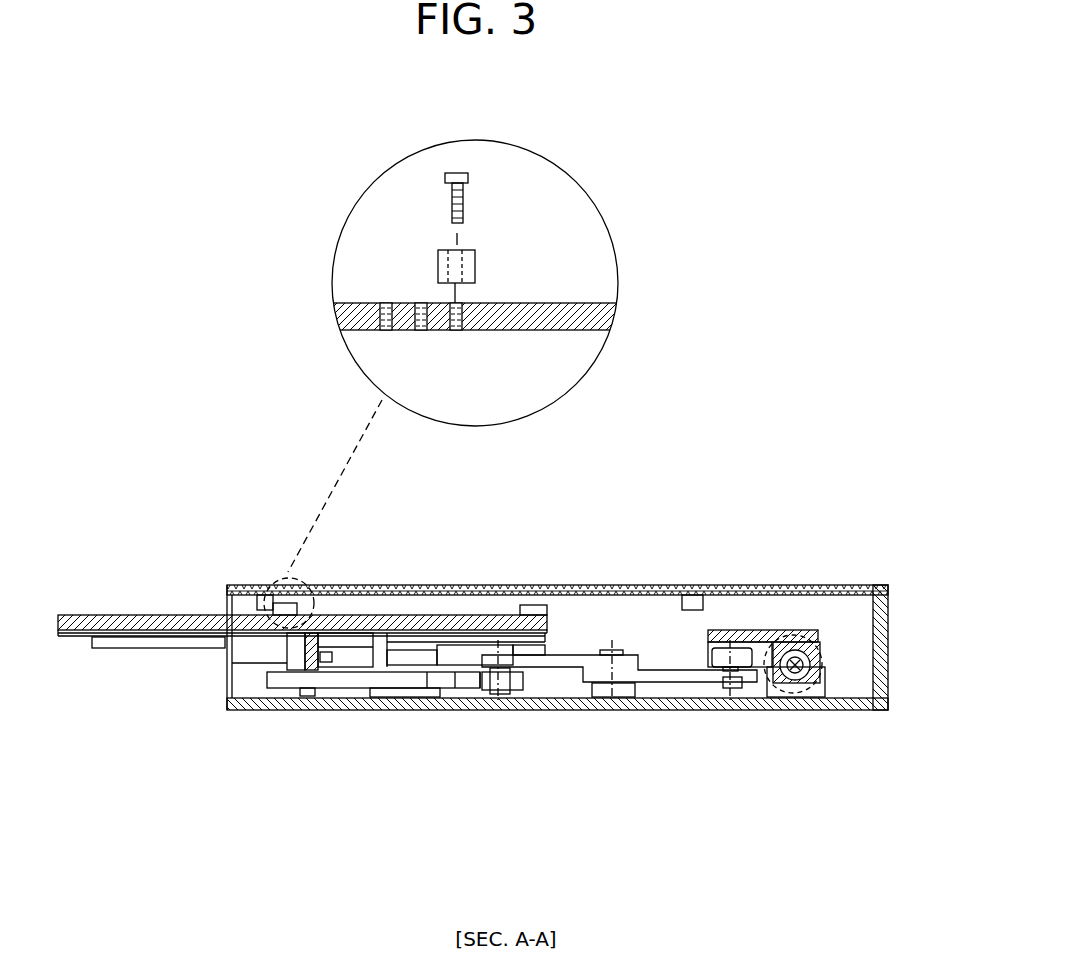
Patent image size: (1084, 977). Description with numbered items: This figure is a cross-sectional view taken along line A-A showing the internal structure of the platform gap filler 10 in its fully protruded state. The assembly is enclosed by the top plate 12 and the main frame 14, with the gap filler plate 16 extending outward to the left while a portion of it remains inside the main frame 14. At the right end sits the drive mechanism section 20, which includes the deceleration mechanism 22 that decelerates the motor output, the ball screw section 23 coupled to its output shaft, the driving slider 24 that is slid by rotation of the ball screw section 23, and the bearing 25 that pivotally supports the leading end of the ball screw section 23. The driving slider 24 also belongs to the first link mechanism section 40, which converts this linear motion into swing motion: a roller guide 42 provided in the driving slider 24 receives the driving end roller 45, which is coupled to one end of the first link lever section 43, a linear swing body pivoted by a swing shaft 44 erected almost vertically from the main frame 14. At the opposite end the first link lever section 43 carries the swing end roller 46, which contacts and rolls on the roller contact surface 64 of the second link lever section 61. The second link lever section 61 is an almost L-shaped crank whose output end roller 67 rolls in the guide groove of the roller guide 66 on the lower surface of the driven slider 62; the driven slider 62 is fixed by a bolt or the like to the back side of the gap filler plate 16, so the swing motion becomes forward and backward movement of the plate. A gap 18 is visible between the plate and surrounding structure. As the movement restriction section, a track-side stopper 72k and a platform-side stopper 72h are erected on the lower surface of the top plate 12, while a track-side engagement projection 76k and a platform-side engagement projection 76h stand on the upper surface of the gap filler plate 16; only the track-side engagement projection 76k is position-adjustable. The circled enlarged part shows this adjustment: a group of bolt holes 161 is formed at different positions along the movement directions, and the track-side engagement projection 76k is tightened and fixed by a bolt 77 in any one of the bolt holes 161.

The platform gap filler 10 is at (857, 495).
The top plate 12 is at (387, 585).
The main frame 14 is at (882, 632).
The gap filler plate 16 is at (543, 305).
The bolt holes 161 is at (386, 331).
The gap / space 18 is at (237, 655).
The drive mechanism section 20 is at (692, 537).
The deceleration mechanism 22 is at (788, 638).
The ball screw section 23 is at (805, 640).
The driving slider 24 is at (742, 632).
The bearing 25 is at (822, 685).
The first link mechanism section 40 is at (497, 777).
The roller guide 42 is at (760, 665).
The first link lever section 43 is at (557, 667).
The swing shaft 44 is at (609, 690).
The driving end roller 45 is at (730, 672).
The swing end roller 46 is at (505, 692).
The second link lever section 61 is at (340, 680).
The driven slider 62 is at (157, 638).
The roller contact surface 64 is at (478, 690).
The roller guide 66 is at (287, 673).
The output end roller 67 is at (313, 680).
The platform-side stopper 72h is at (688, 597).
The track-side stopper 72k is at (258, 595).
The platform-side engagement projection 76h is at (535, 605).
The track-side engagement projection 76k is at (477, 262).
The bolt 77 is at (467, 205).